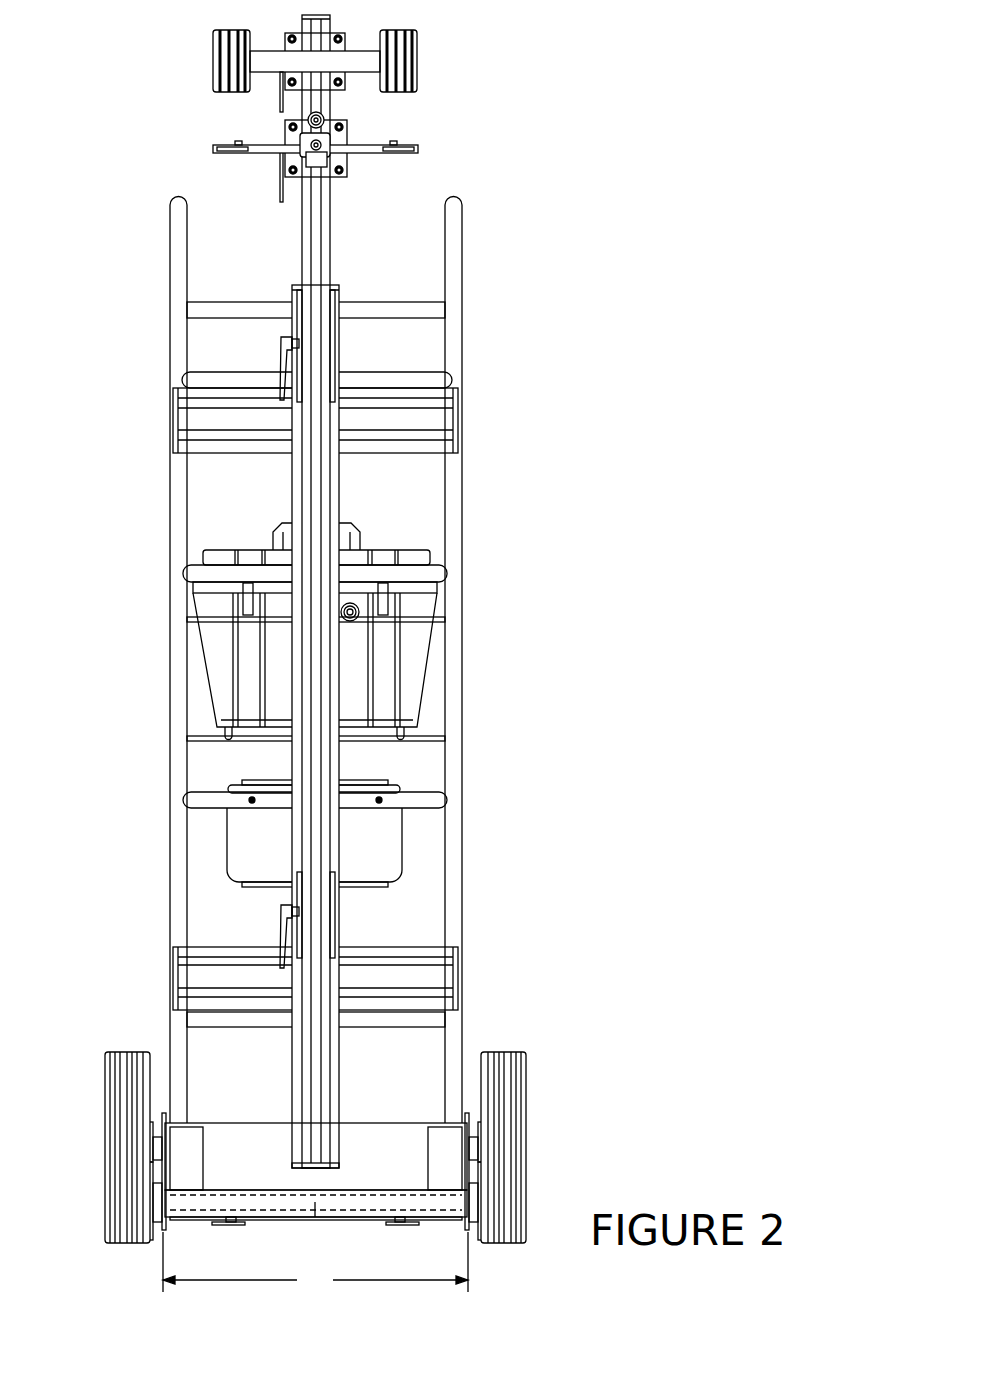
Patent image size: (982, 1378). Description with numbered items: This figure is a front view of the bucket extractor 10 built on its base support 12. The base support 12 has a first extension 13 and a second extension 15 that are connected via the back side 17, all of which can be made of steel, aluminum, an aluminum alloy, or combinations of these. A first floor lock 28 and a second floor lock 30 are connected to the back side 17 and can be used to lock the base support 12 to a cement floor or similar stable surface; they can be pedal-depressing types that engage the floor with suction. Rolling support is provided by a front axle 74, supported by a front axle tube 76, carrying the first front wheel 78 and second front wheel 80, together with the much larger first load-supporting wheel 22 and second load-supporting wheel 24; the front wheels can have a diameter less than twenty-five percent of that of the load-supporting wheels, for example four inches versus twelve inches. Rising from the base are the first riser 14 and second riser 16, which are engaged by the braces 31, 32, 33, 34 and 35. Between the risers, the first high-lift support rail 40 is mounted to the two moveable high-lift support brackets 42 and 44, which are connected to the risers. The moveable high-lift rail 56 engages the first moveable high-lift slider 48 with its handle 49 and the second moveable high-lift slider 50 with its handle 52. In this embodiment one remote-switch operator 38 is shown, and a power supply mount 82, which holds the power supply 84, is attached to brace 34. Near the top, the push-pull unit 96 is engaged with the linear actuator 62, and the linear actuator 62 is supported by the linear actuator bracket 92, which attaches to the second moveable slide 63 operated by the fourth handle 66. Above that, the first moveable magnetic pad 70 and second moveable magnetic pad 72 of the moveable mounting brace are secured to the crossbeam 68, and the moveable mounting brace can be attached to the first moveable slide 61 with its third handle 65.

The bucket extractor 10 is at (490, 156).
The base support 12 is at (315, 1263).
The first extension 13 is at (183, 1222).
The first riser 14 is at (458, 248).
The second extension 15 is at (448, 1222).
The second riser 16 is at (175, 248).
The back side 17 is at (357, 1143).
The first load-supporting wheel 22 is at (125, 1050).
The second load-supporting wheel 24 is at (503, 1050).
The first floor lock 28 is at (232, 1230).
The second floor lock 30 is at (402, 1230).
The brace 31 is at (433, 308).
The brace 32 is at (433, 380).
The brace 33 is at (440, 575).
The brace 34 is at (440, 800).
The brace 35 is at (440, 1020).
The bin handle 38 is at (405, 557).
The first high-lift support rail 40 is at (295, 1062).
The first high-lift support bracket 42 is at (405, 420).
The second high-lift support bracket 44 is at (405, 978).
The first moveable high-lift slider 48 is at (333, 353).
The handle 49 is at (280, 345).
The second moveable high-lift slider 50 is at (333, 920).
The handle 52 is at (280, 913).
The moveable high-lift rail 56 is at (307, 235).
The first moveable slide 61 is at (332, 82).
The linear actuator 62 is at (327, 142).
The second moveable slide 63 is at (340, 160).
The third handle 65 is at (280, 93).
The fourth handle 66 is at (280, 180).
The crossbeam 68 is at (353, 60).
The first moveable magnetic pad 70 is at (222, 82).
The second moveable magnetic pad 72 is at (412, 83).
The front axle 74 is at (315, 1205).
The front axle tube 76 is at (262, 1190).
The first front wheel 78 is at (145, 1237).
The second front wheel 80 is at (488, 1237).
The power supply mount 82 is at (395, 848).
The power supply 84 is at (377, 780).
The linear actuator bracket 92 is at (317, 165).
The push-pull unit 96 is at (217, 153).